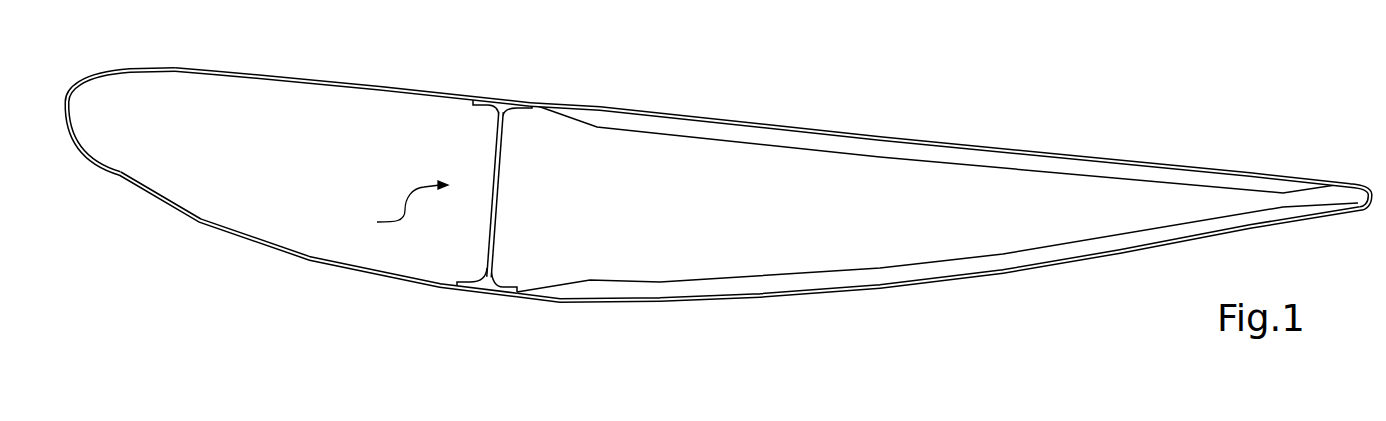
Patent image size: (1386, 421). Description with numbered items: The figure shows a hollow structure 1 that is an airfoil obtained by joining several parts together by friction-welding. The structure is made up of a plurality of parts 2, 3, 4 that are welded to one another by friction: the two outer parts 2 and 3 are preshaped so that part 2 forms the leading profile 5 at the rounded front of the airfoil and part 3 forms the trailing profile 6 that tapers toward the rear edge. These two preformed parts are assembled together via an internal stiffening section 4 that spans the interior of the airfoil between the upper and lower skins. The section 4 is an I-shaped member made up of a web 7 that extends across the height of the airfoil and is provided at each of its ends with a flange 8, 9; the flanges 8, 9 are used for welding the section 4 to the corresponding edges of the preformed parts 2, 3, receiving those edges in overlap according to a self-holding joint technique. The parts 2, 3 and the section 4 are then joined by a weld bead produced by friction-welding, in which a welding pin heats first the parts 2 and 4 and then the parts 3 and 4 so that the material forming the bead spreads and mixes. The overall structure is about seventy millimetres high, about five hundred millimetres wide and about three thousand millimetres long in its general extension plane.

The hollow structure 1 is at (718, 197).
The part 2 is at (343, 80).
The part 3 is at (962, 144).
The internal stiffening section 4 is at (401, 208).
The leading profile 5 is at (153, 207).
The trailing profile 6 is at (1003, 274).
The web 7 is at (501, 199).
The flange 8 is at (490, 117).
The flange 9 is at (497, 281).